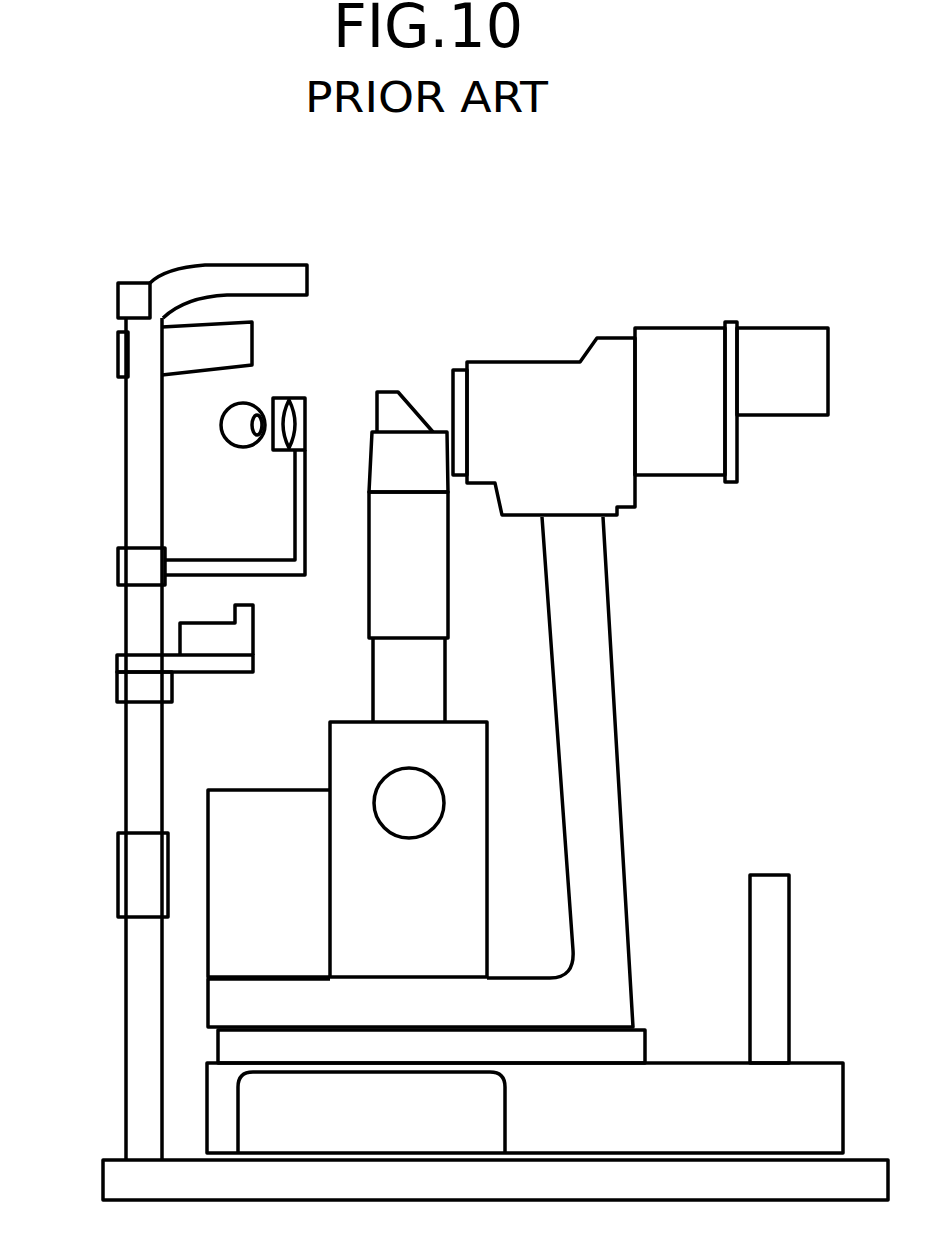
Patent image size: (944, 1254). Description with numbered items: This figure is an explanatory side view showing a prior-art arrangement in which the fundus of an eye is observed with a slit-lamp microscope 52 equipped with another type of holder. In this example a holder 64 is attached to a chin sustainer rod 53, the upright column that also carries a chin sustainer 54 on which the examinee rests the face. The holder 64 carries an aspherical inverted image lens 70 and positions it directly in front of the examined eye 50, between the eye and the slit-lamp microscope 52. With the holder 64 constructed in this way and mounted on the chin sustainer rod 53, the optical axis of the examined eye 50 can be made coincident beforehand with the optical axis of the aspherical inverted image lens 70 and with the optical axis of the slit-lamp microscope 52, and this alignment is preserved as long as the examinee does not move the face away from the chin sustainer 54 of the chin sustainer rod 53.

The examined eye 50 is at (243, 447).
The slit-lamp microscope 52 is at (528, 368).
The chin sustainer rod 53 is at (130, 481).
The chin sustainer 54 is at (220, 642).
The holder 64 is at (185, 568).
The aspherical inverted image lens 70 is at (290, 400).